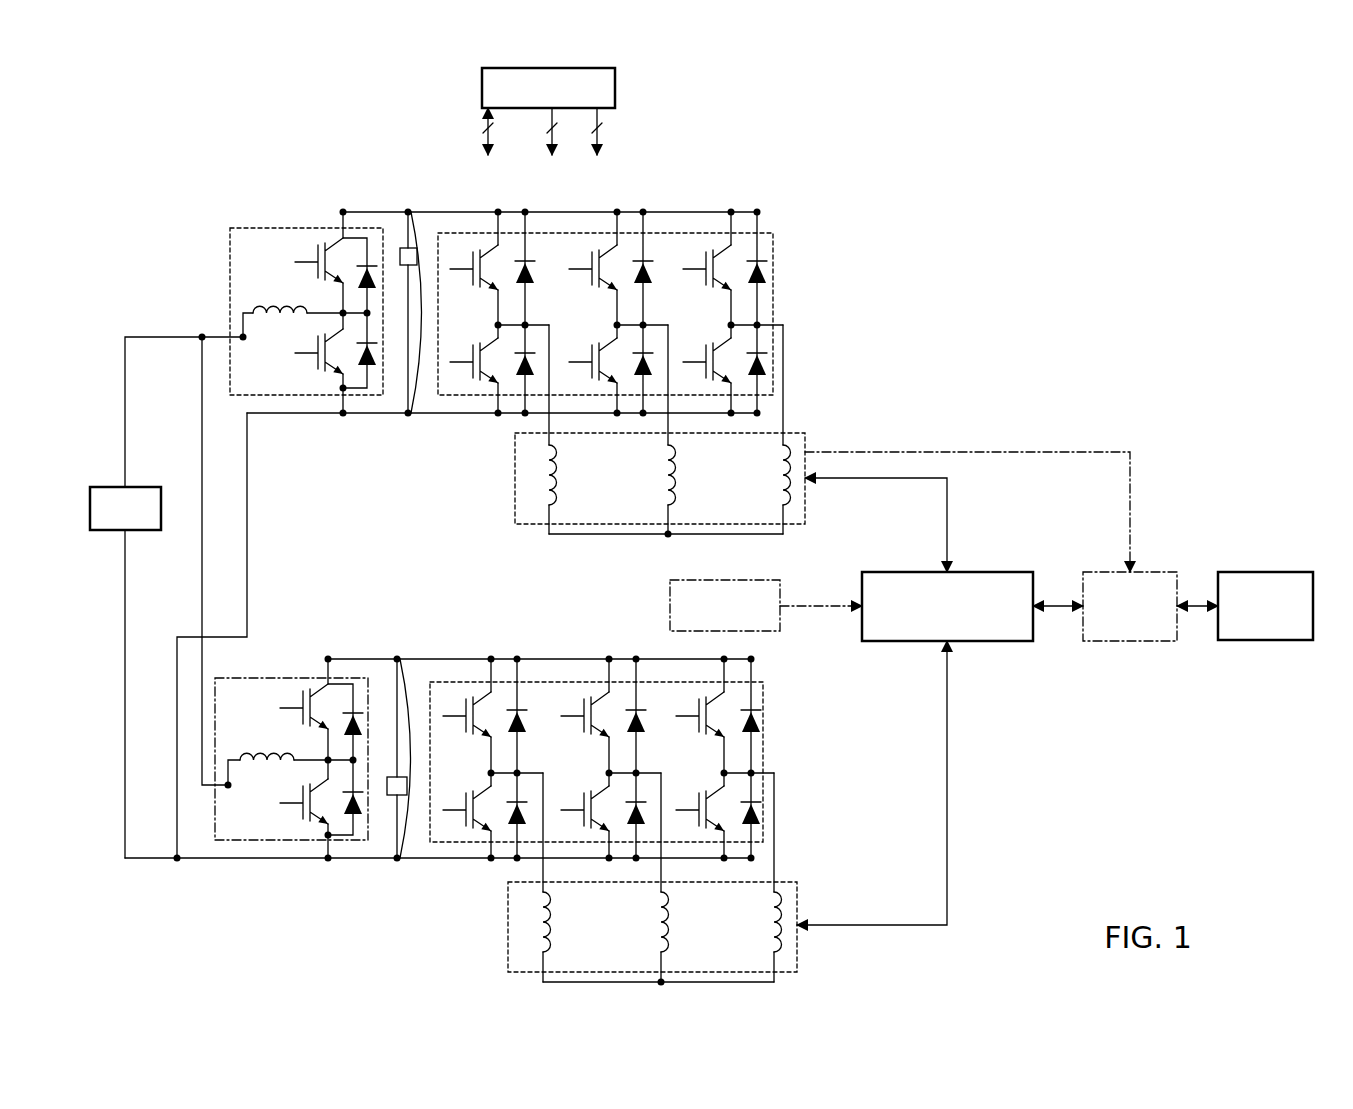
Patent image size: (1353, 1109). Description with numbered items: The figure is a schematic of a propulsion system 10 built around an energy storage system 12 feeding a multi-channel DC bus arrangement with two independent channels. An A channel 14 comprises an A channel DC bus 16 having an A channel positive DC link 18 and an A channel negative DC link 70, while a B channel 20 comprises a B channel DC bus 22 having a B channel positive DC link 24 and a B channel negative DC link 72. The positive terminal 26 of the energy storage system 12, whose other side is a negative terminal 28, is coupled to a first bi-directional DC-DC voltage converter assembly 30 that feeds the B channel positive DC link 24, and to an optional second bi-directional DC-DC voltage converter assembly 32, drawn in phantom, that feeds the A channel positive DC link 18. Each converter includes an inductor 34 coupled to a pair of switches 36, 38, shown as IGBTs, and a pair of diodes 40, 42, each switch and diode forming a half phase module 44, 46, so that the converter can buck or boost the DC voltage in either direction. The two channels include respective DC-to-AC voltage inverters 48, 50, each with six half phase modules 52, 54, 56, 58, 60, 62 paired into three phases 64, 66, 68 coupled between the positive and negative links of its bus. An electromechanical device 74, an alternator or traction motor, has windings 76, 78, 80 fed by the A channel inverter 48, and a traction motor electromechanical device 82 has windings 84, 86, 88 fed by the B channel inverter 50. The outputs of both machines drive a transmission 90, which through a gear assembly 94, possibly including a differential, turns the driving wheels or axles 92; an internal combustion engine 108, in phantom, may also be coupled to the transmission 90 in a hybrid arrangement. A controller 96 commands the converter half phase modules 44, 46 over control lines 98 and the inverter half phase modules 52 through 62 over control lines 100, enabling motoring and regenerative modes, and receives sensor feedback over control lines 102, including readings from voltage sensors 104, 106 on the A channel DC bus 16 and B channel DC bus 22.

The propulsion system 10 is at (136, 133).
The energy storage system 12 is at (161, 508).
The A channel 14 is at (308, 637).
The A channel DC bus 16 is at (416, 758).
The A channel positive DC link 18 is at (373, 659).
The B channel 20 is at (246, 214).
The B channel DC bus 22 is at (424, 312).
The B channel positive DC link 24 is at (378, 212).
The positive terminal 26 is at (124, 487).
The negative terminal 28 is at (128, 531).
The first bi-directional DC-DC voltage converter assembly 30 is at (280, 228).
The second bi-directional DC-DC voltage converter assembly 32 is at (242, 678).
The inductor 34 is at (263, 308).
The switch 36 is at (309, 266).
The switch 38 is at (309, 356).
The diode 40 is at (372, 280).
The diode 42 is at (372, 354).
The half phase module 44 is at (292, 252).
The half phase module 46 is at (292, 345).
The DC-to-AC voltage inverter 48 is at (769, 684).
The DC-to-AC voltage inverter 50 is at (776, 242).
The half phase module 52 is at (481, 248).
The half phase module 54 is at (600, 248).
The half phase module 56 is at (714, 244).
The half phase module 58 is at (481, 337).
The half phase module 60 is at (600, 337).
The half phase module 62 is at (714, 333).
The phase 64 is at (514, 207).
The phase 66 is at (633, 207).
The phase 68 is at (744, 208).
The A channel negative DC link 70 is at (366, 859).
The B channel negative DC link 72 is at (383, 414).
The electromechanical device 74 is at (506, 946).
The winding 76 is at (551, 930).
The winding 78 is at (670, 930).
The winding 80 is at (772, 911).
The electromechanical device 82 is at (513, 490).
The winding 84 is at (558, 485).
The winding 86 is at (677, 485).
The winding 88 is at (779, 467).
The transmission 90 is at (991, 641).
The driving wheels or axles 92 is at (1254, 640).
The gear assembly 94 is at (1118, 641).
The controller 96 is at (482, 99).
The control lines 98 is at (552, 120).
The control lines 100 is at (600, 122).
The control lines 102 is at (486, 120).
The voltage sensor 104 is at (395, 777).
The voltage sensor 106 is at (403, 248).
The internal combustion engine 108 is at (670, 608).